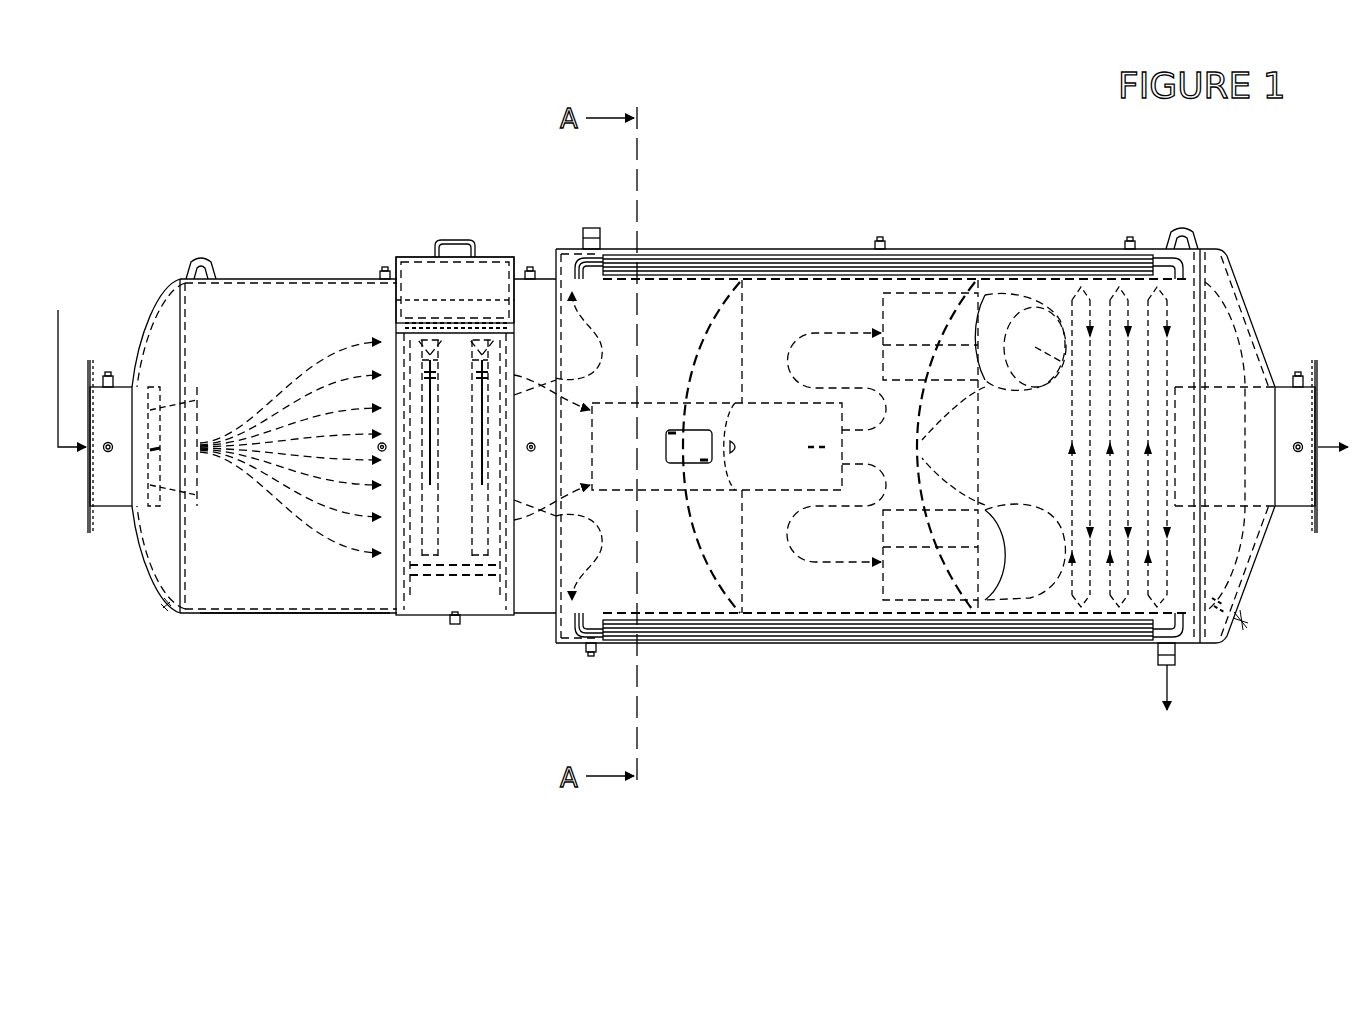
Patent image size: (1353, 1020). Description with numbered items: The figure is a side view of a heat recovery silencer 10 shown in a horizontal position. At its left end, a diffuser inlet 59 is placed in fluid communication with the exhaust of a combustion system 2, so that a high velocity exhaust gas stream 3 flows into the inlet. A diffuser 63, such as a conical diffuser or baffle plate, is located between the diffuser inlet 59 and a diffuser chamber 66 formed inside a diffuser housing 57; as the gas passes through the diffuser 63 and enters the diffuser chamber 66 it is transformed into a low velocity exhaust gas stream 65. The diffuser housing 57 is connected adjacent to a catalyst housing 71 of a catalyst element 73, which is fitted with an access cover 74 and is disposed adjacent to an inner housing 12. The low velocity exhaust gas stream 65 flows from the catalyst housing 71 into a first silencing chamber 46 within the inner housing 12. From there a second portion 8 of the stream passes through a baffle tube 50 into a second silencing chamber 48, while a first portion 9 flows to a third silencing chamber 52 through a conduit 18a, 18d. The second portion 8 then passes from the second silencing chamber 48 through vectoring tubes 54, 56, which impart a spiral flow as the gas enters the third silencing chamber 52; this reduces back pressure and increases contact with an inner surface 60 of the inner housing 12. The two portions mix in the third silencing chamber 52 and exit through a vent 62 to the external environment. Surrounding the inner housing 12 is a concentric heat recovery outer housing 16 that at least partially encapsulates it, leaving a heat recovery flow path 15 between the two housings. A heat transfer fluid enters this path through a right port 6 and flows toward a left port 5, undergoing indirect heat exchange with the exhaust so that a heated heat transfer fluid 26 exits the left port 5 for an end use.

The combustion system 2 is at (68, 305).
The high velocity exhaust gas stream 3 is at (62, 449).
The left port 5 is at (592, 228).
The right port 6 is at (1176, 658).
The second portion of the low velocity exhaust gas stream 8 is at (528, 390).
The first portion of the low velocity exhaust gas stream 9 is at (598, 565).
The heat recovery silencer 10 is at (1160, 777).
The inner housing 12 is at (872, 618).
The heat recovery flow path 15 is at (552, 641).
The heat recovery outer housing 16 is at (970, 643).
The conduit 18a is at (815, 256).
The conduit 18d is at (818, 641).
The heated heat transfer fluid 26 is at (1160, 678).
The first silencing chamber 46 is at (702, 299).
The second silencing chamber 48 is at (773, 299).
The baffle tube 50 is at (665, 403).
The third silencing chamber 52 is at (1177, 296).
The vectoring tube 54 is at (1018, 600).
The vectoring tube 56 is at (1020, 297).
The diffuser housing 57 is at (288, 614).
The diffuser inlet 59 is at (128, 386).
The inner surface of the inner housing 60 is at (752, 613).
The vent 62 is at (1280, 387).
The diffuser 63 is at (197, 497).
The low velocity exhaust gas stream 65 is at (252, 380).
The diffuser chamber 66 is at (318, 297).
The catalyst housing 71 is at (436, 615).
The catalyst element 73 is at (500, 250).
The access cover 74 is at (418, 257).